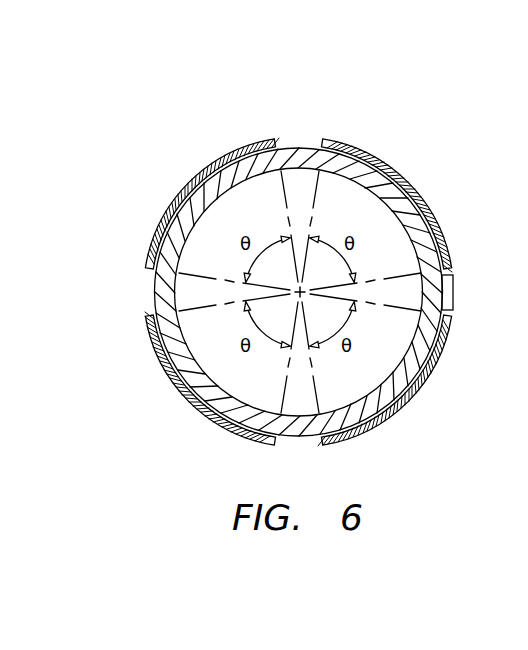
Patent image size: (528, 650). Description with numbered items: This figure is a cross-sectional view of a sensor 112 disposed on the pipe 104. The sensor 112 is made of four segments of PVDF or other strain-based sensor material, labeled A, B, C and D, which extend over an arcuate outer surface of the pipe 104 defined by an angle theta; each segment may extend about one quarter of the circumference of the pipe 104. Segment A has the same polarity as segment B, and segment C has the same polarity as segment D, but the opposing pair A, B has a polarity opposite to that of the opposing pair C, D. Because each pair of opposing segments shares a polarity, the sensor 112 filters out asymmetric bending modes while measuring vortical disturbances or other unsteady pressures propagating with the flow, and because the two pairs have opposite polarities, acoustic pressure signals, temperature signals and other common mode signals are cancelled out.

The sensor 112 is at (300, 247).
The pipe 104 is at (447, 250).
The segment A is at (202, 202).
The segment B is at (396, 387).
The segment C is at (399, 204).
The segment D is at (200, 385).